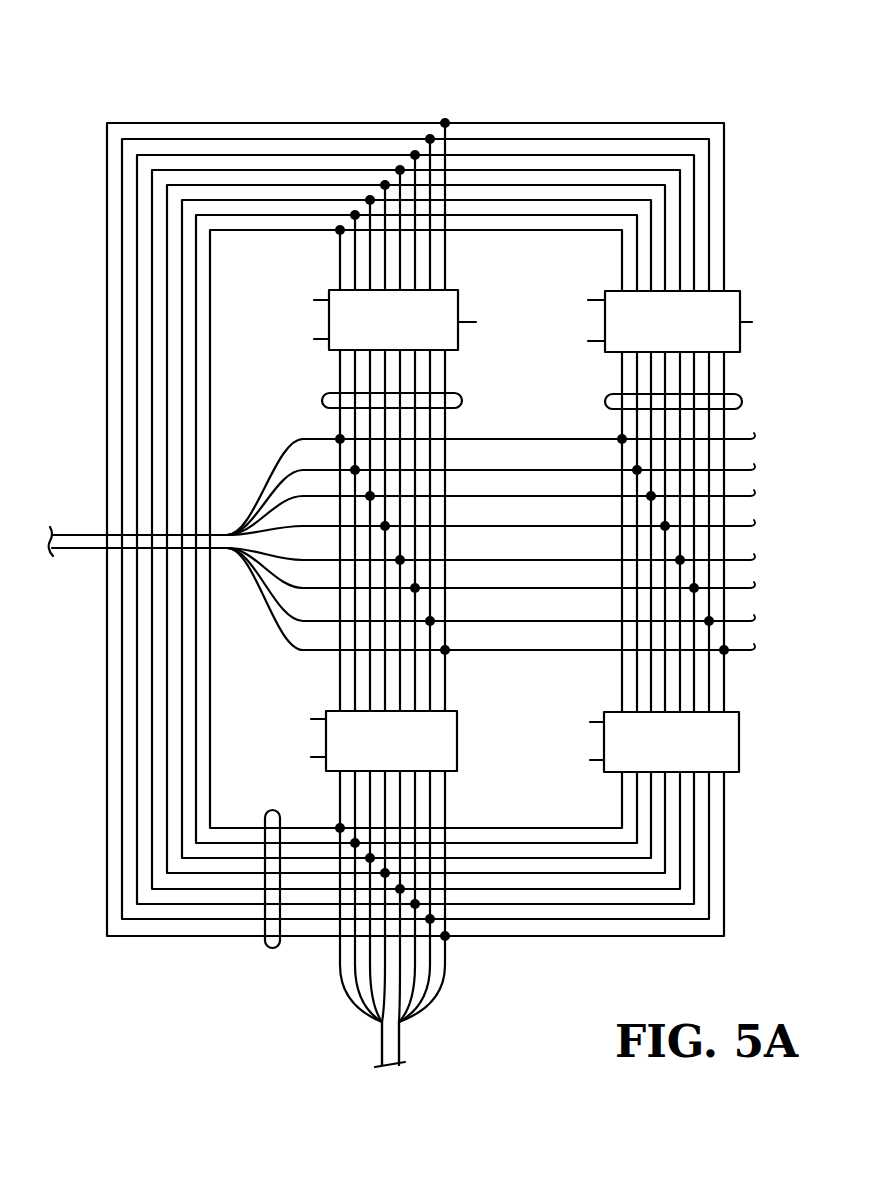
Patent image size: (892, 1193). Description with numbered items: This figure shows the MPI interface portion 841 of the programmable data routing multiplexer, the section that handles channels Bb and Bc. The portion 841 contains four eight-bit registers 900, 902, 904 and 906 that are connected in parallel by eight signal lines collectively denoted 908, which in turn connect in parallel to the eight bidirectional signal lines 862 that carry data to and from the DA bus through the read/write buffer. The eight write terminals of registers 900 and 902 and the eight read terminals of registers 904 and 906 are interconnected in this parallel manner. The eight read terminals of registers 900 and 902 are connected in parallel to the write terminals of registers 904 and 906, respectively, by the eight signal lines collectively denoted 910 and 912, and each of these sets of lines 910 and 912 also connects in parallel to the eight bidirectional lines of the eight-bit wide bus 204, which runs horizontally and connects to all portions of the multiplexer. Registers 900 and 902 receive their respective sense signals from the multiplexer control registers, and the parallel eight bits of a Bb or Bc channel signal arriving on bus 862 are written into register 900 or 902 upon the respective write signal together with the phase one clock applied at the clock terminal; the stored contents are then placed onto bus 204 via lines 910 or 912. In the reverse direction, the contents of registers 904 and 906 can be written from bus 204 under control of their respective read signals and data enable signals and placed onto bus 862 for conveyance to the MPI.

The MPI interface portion 841 is at (752, 85).
The eight-bit register 900 is at (392, 332).
The eight-bit register 902 is at (666, 335).
The eight-bit register 904 is at (398, 758).
The eight-bit register 906 is at (698, 758).
The eight signal lines 908 is at (274, 948).
The eight signal lines 910 is at (462, 400).
The eight signal lines 912 is at (742, 398).
The eight-bit wide bus 204 is at (72, 551).
The bidirectional signal lines 862 is at (399, 1050).